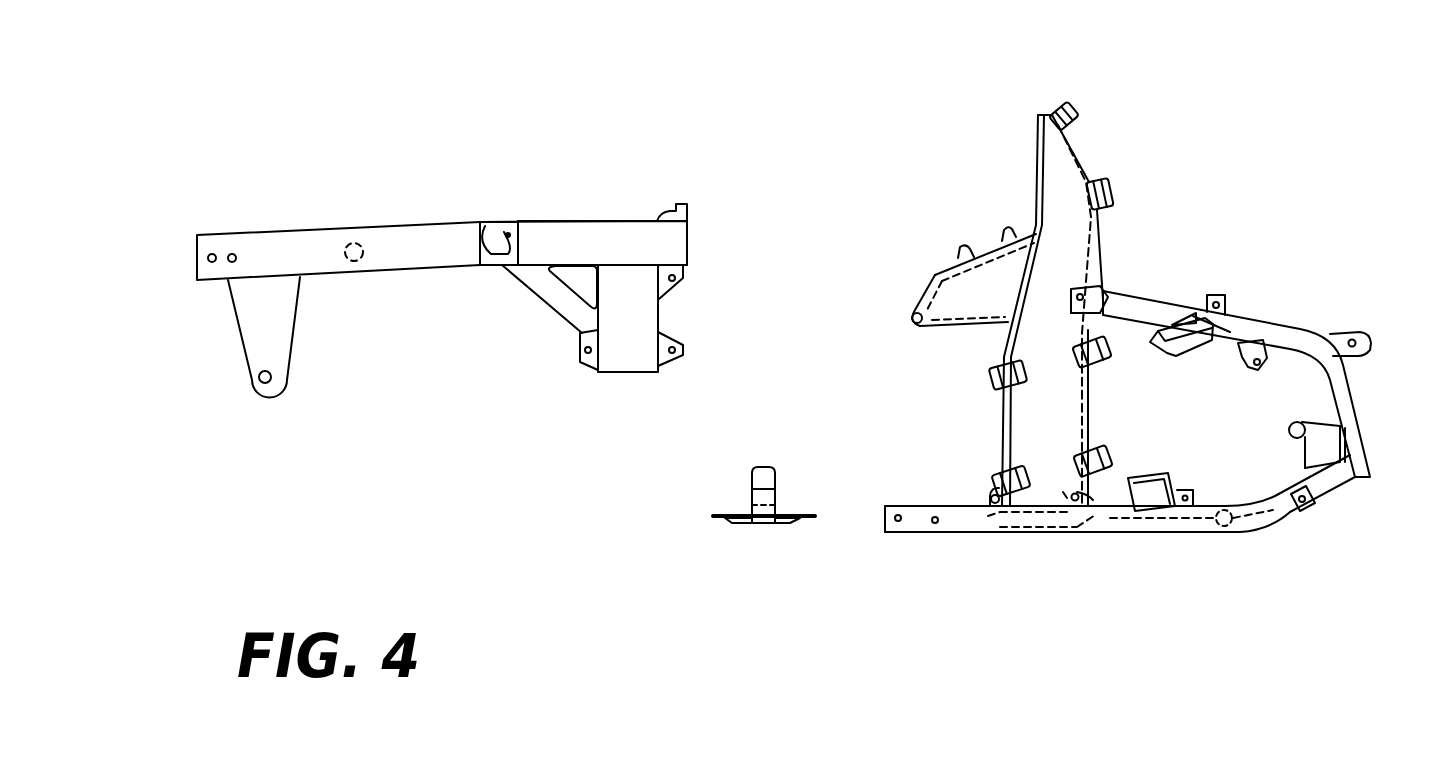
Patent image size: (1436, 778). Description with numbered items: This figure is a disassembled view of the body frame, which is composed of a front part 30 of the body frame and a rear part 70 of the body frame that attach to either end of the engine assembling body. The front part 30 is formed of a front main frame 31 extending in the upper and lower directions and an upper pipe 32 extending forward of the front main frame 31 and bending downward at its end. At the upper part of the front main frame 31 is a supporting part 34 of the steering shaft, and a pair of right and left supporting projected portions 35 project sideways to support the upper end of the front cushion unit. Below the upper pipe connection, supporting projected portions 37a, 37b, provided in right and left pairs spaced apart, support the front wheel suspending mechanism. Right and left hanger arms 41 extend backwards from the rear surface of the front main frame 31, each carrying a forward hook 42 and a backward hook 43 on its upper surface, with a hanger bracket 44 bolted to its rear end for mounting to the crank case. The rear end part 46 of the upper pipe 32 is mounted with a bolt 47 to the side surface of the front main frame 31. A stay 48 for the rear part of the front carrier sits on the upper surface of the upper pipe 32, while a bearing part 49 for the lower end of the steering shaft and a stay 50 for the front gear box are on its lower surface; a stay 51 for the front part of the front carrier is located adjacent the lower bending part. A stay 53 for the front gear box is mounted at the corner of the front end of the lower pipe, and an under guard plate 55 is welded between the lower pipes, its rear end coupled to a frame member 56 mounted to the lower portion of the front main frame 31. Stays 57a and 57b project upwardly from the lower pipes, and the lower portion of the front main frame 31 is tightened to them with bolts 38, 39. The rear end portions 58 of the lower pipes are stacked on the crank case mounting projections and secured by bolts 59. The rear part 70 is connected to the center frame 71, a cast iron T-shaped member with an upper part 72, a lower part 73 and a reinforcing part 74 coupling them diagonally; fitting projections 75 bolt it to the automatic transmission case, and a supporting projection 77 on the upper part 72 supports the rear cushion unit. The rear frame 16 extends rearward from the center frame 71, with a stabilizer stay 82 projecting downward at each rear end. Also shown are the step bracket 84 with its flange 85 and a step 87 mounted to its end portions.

The rear frame 16 is at (308, 232).
The front part of the body frame 30 is at (1243, 175).
The front main frame 31 is at (1058, 175).
The upper pipe 32 is at (1303, 335).
The supporting part of the steering shaft 34 is at (1075, 110).
The supporting projected portions 35 is at (1113, 193).
The supporting projected portion 37a is at (997, 383).
The supporting projected portion 37b is at (1077, 453).
The bolt 38 is at (1103, 507).
The bolt 39 is at (993, 488).
The hanger arm 41 is at (985, 328).
The forward hook 42 is at (1007, 228).
The backward hook 43 is at (960, 247).
The hanger bracket 44 is at (932, 297).
The rear end part of the upper pipe 46 is at (1073, 289).
The bolt 47 is at (1073, 298).
The stay 48 is at (1208, 292).
The bearing part 49 is at (1180, 355).
The stay for the front gear box 50 is at (1268, 360).
The stay 51 is at (1372, 350).
The stay 53 is at (1297, 420).
The under guard plate 55 is at (1235, 527).
The frame member 56 is at (1070, 532).
The stay 57a is at (1078, 493).
The stay 57b is at (988, 500).
The rear end portion of the lower pipe 58 is at (920, 533).
The bolt 59 is at (935, 522).
The rear part of the body frame 70 is at (368, 215).
The center frame 71 is at (697, 223).
The upper part 72 is at (585, 227).
The lower part 73 is at (632, 360).
The reinforcing part 74 is at (547, 303).
The fitting projections 75 is at (673, 292).
The supporting projection 77 is at (507, 235).
The stabilizer stay 82 is at (296, 310).
The step bracket 84 is at (770, 513).
The flange 85 is at (722, 518).
The step 87 is at (758, 470).